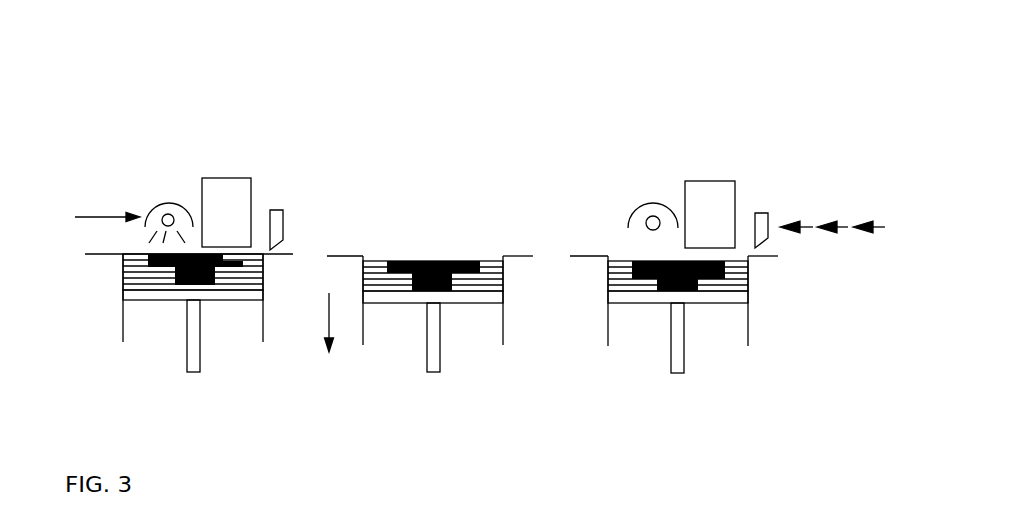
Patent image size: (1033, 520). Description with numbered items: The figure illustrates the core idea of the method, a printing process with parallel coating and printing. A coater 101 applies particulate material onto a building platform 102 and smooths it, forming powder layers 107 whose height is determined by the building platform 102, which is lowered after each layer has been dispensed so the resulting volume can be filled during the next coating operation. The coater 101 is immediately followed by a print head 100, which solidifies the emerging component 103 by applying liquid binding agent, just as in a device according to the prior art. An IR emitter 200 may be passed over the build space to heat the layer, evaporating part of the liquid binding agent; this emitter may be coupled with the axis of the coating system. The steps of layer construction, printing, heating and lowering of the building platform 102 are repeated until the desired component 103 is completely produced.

The IR emitter 200 is at (156, 206).
The print head 100 is at (220, 195).
The coater 101 is at (274, 207).
The powder layers 107 is at (137, 301).
The building platform 102 is at (246, 303).
The component 103 is at (438, 292).